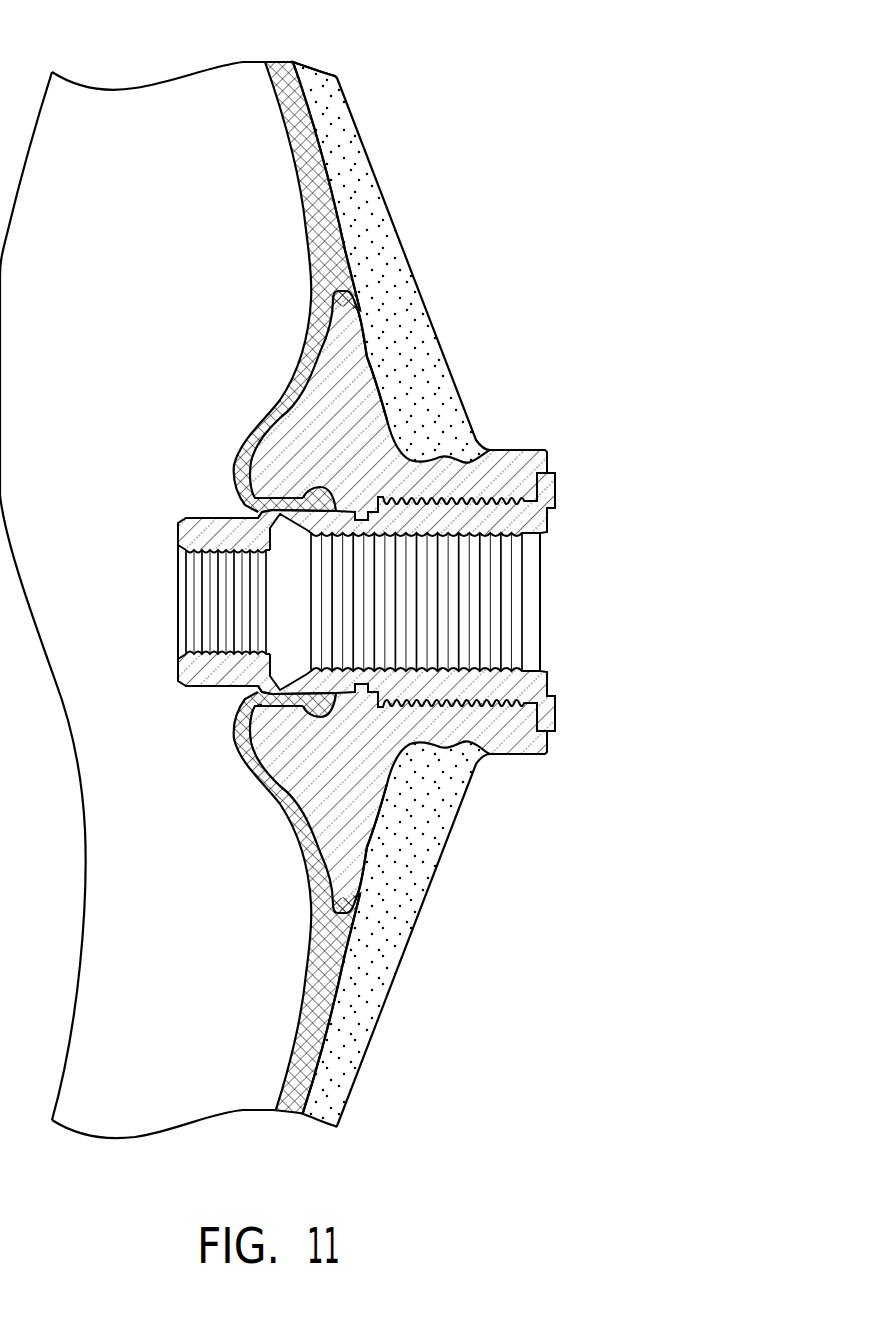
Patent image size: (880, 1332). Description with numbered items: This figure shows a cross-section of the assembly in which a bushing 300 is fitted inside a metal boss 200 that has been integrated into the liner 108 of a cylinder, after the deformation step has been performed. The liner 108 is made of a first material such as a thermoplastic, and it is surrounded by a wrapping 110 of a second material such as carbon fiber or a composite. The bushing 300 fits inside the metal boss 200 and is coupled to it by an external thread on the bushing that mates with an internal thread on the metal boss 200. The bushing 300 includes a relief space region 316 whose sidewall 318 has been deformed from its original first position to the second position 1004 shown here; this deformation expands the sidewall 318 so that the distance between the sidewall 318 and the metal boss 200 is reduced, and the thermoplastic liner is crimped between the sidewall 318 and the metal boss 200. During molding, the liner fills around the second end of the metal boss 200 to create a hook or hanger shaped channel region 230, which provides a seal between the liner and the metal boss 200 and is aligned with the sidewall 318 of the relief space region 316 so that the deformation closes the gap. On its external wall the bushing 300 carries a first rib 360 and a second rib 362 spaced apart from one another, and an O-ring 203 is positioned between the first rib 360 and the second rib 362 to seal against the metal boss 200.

The liner 108 is at (280, 62).
The wrapping 110 is at (343, 190).
The metal boss 200 is at (521, 464).
The O-ring 203 is at (370, 512).
The channel region 230 is at (306, 510).
The bushing 300 is at (178, 518).
The relief space region 316 is at (274, 496).
The sidewall 318 is at (258, 514).
The first rib 360 is at (383, 498).
The second rib 362 is at (345, 513).
The second position 1004 is at (267, 701).